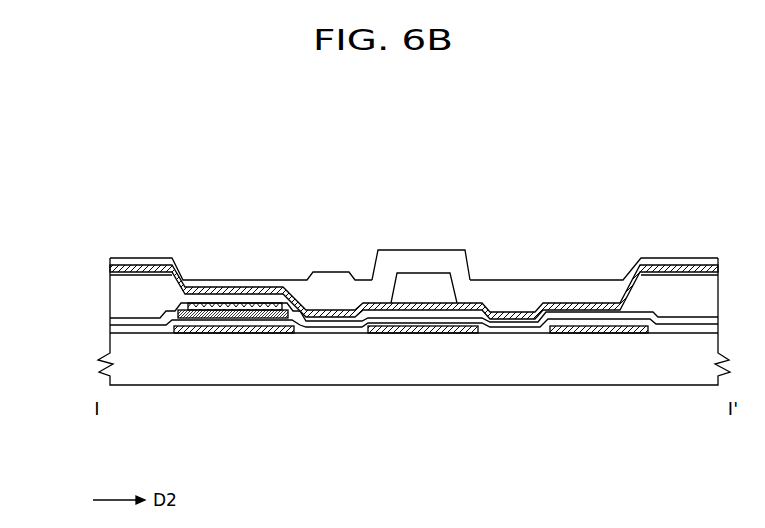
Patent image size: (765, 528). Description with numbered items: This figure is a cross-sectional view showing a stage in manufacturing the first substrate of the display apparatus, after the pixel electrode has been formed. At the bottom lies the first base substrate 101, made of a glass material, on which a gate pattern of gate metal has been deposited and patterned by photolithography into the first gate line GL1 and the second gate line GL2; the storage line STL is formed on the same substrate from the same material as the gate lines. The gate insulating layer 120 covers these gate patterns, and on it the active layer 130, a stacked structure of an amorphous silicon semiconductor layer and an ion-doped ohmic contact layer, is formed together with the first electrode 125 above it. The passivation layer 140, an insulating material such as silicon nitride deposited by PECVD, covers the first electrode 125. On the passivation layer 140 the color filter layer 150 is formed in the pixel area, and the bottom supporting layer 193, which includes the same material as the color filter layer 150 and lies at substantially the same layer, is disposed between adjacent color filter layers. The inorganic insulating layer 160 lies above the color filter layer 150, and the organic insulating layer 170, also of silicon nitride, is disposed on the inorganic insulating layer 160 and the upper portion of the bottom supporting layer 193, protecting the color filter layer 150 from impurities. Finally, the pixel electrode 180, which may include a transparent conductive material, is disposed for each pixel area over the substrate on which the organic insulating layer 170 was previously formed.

The first base substrate 101 is at (110, 376).
The gate insulating layer 120 is at (110, 333).
The first electrode 125 is at (252, 318).
The active layer 130 is at (190, 318).
The passivation layer 140 is at (110, 318).
The color filter layer 150 is at (112, 297).
The inorganic insulating layer 160 is at (110, 272).
The organic insulating layer 170 is at (515, 292).
The pixel electrode 180 is at (110, 258).
The bottom supporting layer 193 is at (403, 292).
The storage line STL is at (230, 333).
The first gate line GL1 is at (443, 334).
The second gate line GL2 is at (602, 334).